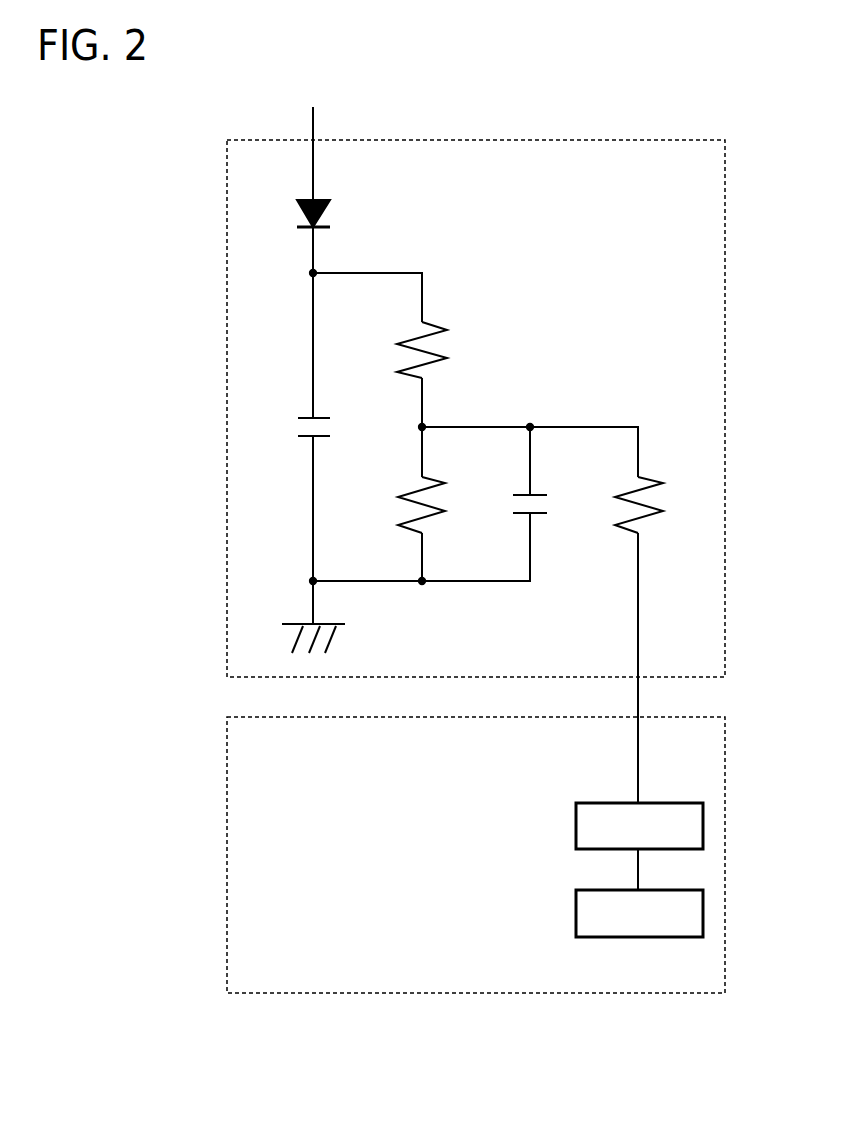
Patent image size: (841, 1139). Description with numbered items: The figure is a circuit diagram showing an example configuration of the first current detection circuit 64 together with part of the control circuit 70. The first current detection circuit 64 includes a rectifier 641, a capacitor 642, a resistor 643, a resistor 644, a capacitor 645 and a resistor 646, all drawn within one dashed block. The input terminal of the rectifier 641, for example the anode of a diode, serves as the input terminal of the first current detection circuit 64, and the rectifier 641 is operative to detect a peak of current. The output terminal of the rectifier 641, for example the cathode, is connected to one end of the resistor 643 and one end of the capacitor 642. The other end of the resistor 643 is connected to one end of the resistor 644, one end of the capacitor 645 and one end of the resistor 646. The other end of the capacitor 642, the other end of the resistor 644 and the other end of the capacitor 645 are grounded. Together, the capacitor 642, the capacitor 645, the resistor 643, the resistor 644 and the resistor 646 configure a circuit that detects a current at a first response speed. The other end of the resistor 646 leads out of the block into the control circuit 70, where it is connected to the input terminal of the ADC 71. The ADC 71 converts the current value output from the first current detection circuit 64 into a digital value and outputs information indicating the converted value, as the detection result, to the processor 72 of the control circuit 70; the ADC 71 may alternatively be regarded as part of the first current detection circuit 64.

The first current detection circuit 64 is at (663, 140).
The rectifier 641 is at (316, 202).
The capacitor 642 is at (321, 418).
The resistor 643 is at (432, 328).
The resistor 644 is at (434, 479).
The capacitor 645 is at (541, 494).
The resistor 646 is at (643, 478).
The control circuit 70 is at (727, 806).
The ADC 71 is at (612, 803).
The processor 72 is at (612, 890).